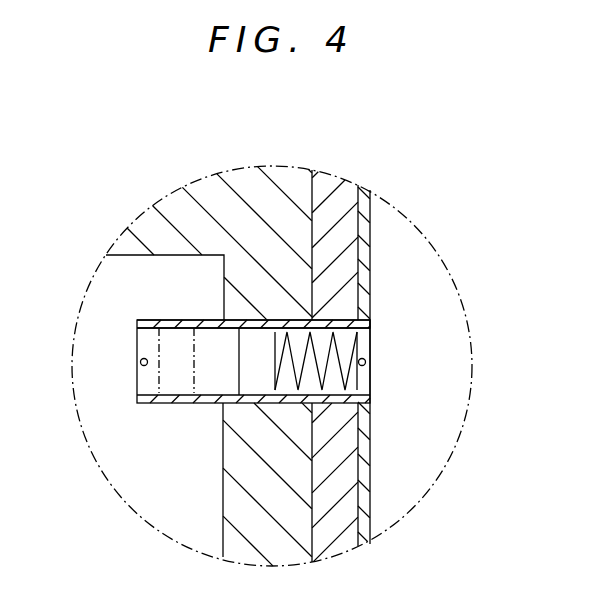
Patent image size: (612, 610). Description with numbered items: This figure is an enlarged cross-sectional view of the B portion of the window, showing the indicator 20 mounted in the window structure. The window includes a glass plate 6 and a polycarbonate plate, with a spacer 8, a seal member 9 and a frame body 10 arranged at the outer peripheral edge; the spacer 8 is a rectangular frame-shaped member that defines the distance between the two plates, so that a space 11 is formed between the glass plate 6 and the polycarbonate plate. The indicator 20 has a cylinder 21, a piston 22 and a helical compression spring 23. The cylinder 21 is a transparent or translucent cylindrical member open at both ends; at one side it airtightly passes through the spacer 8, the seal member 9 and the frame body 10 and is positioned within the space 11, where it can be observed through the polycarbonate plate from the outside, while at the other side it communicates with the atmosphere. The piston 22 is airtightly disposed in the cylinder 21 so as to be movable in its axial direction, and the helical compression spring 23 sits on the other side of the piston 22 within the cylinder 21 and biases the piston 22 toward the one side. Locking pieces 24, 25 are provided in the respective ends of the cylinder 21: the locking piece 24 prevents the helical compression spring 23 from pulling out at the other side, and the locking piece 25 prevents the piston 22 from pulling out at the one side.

The glass plate 6 is at (137, 495).
The spacer 8 is at (152, 220).
The seal member 9 is at (348, 188).
The frame body 10 is at (367, 518).
The space 11 is at (95, 443).
The indicator 20 is at (425, 368).
The cylinder 21 is at (200, 403).
The piston 22 is at (244, 322).
The helical compression spring 23 is at (338, 352).
The locking piece 24 is at (365, 367).
The locking piece 25 is at (141, 363).
The B portion B is at (420, 230).